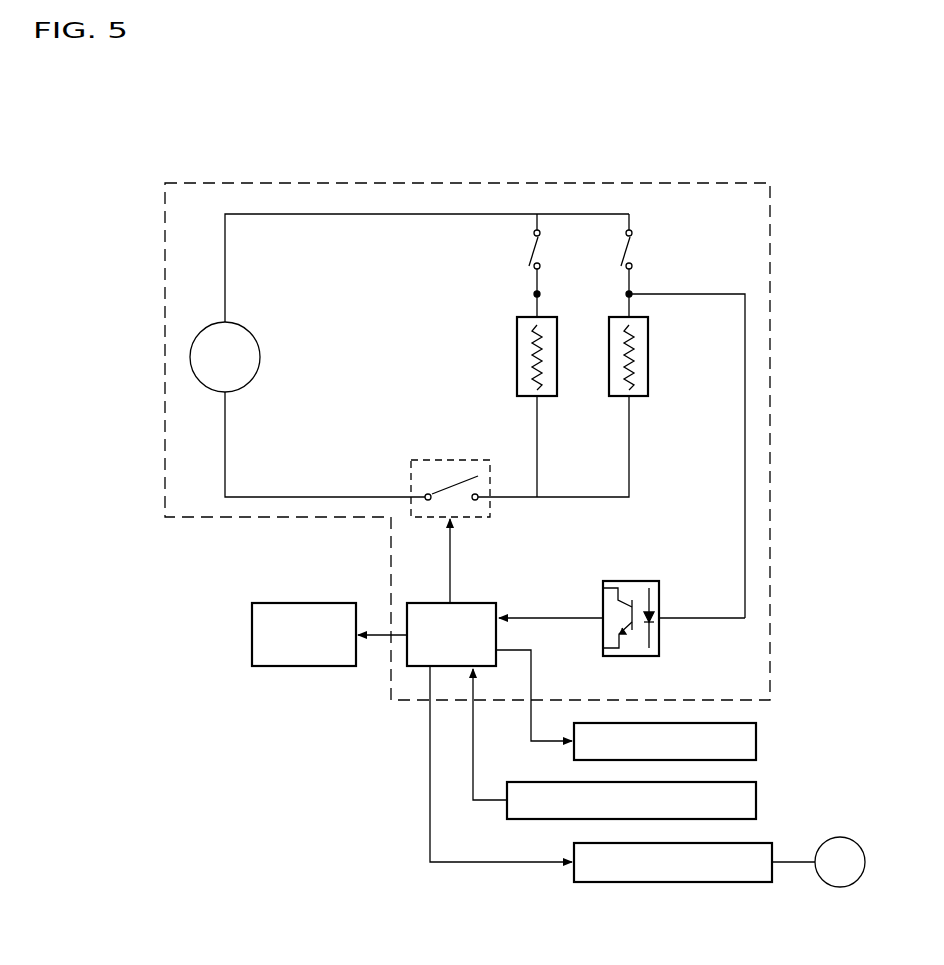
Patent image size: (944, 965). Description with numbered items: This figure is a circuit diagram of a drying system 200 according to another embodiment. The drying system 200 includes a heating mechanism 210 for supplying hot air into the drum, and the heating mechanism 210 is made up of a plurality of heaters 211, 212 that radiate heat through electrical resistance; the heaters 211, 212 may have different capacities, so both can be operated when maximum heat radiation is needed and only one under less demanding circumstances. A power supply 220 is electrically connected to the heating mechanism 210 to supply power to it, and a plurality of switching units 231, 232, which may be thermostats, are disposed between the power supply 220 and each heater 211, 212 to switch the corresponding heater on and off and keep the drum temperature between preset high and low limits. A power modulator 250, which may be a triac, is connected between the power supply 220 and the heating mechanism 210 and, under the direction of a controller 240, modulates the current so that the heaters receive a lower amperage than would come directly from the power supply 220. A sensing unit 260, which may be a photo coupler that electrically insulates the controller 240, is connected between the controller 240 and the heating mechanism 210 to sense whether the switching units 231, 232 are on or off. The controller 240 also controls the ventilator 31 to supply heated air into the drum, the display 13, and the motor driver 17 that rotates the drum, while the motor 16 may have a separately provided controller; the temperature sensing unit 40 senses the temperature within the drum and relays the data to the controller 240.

The drying system 200 is at (772, 338).
The heating mechanism 210 is at (608, 407).
The heater 211 is at (648, 349).
The heater 212 is at (548, 397).
The power supply 220 is at (190, 355).
The switching unit 231 is at (620, 247).
The switching unit 232 is at (527, 245).
The controller 240 is at (478, 600).
The power modulator 250 is at (450, 460).
The sensing unit 260 is at (632, 581).
The display 13 is at (303, 603).
The ventilator 31 is at (756, 742).
The temperature sensing unit 40 is at (756, 800).
The motor driver 17 is at (678, 885).
The motor 16 is at (840, 837).